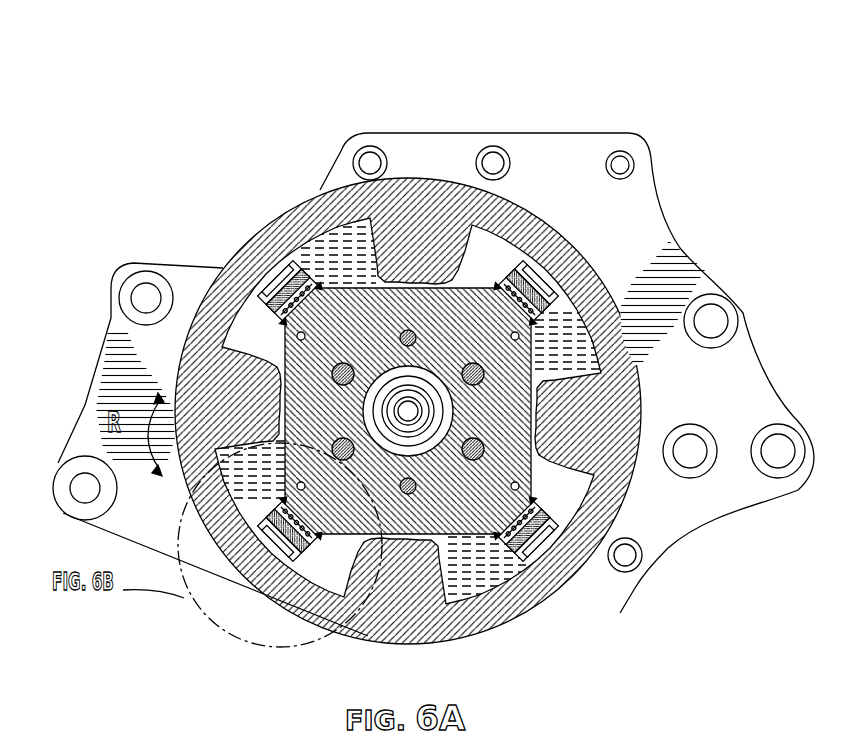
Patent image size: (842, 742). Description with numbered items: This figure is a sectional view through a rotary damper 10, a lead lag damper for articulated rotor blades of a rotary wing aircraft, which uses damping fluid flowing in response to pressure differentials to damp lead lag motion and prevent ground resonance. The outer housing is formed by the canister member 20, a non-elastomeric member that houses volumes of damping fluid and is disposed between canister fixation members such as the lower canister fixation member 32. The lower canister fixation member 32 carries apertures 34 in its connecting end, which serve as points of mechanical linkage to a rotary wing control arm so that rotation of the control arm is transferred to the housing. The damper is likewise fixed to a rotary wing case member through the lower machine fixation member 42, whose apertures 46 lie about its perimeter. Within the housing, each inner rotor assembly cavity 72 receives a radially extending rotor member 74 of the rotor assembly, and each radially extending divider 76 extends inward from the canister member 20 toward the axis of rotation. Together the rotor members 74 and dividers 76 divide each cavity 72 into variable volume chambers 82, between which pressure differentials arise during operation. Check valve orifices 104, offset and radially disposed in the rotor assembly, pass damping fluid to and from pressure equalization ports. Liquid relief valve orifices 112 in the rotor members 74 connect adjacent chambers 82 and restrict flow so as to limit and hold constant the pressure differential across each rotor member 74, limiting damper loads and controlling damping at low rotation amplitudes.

The rotary damper 10 is at (153, 80).
The canister member 20 is at (362, 632).
The lower canister fixation member 32 is at (120, 518).
The aperture 34 is at (76, 472).
The lower machine fixation member 42 is at (690, 493).
The aperture 46 is at (613, 154).
The inner rotor assembly cavity 72 is at (393, 300).
The radially extending rotor member 74 is at (513, 262).
The radially extending divider 76 is at (398, 237).
The variable volume chamber 82 is at (340, 258).
The check valve orifice 104 is at (290, 214).
The liquid relief valve orifice 112 is at (538, 262).